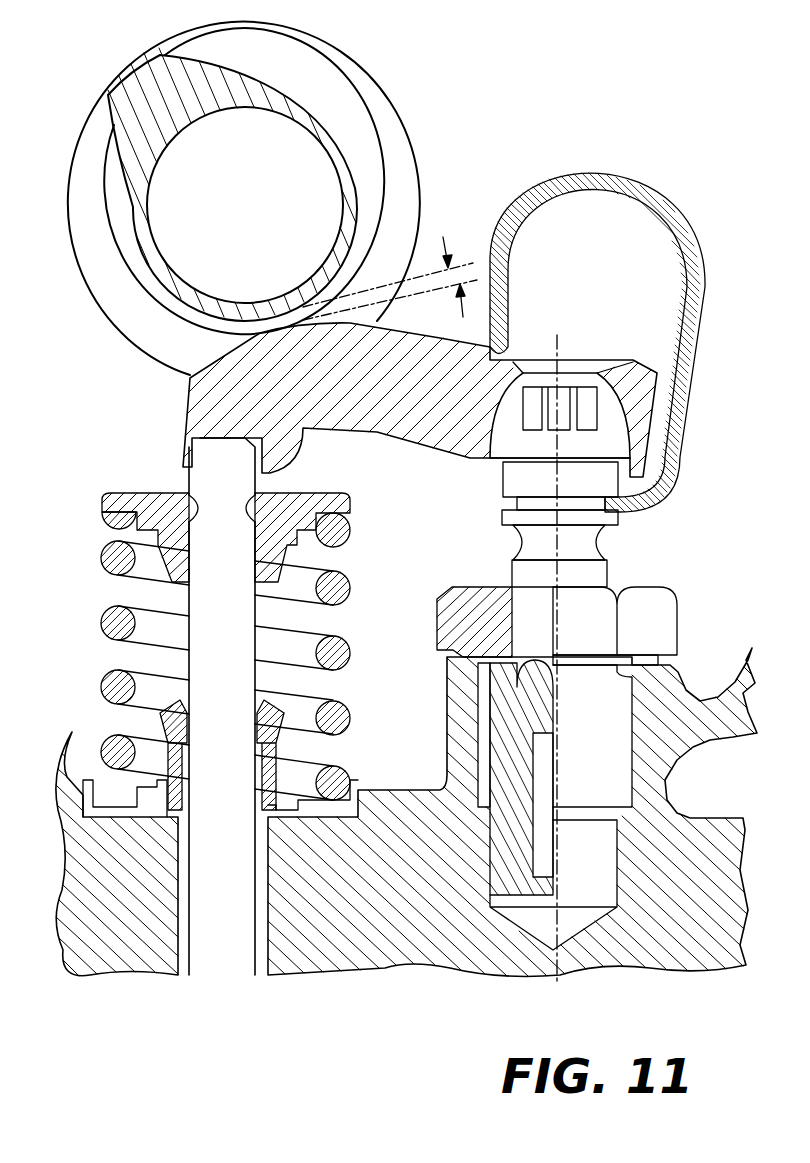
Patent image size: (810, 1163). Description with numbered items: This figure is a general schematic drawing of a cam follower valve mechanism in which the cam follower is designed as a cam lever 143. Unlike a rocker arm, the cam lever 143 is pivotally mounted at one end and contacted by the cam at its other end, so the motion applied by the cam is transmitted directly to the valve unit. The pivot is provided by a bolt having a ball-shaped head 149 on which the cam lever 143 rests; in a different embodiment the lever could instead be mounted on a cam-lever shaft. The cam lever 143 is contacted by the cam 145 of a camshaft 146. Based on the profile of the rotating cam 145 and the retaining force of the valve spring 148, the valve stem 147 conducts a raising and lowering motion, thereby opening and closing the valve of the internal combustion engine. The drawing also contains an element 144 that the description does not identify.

The cam lever 143 is at (403, 383).
The cam ring 144 is at (373, 100).
The cam 145 is at (140, 93).
The camshaft 146 is at (590, 480).
The valve stem 147 is at (220, 933).
The valve spring 148 is at (333, 653).
The ball-shaped head 149 is at (533, 407).